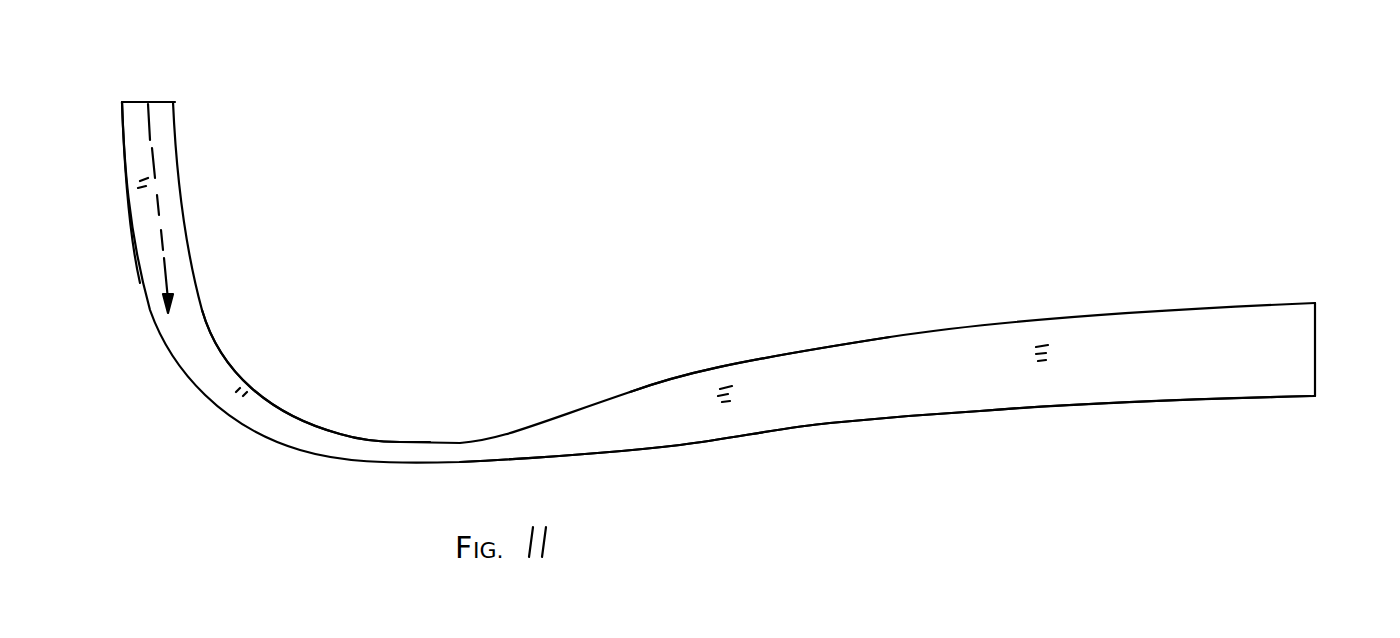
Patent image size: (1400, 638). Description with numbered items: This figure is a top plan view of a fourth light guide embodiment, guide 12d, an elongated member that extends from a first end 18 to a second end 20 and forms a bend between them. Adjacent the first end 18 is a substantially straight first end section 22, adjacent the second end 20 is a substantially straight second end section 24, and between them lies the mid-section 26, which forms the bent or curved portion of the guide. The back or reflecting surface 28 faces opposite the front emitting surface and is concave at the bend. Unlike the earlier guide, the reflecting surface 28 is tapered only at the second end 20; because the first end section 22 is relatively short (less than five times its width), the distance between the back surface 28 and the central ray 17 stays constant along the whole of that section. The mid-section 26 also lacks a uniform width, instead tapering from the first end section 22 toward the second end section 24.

The guide 12d is at (573, 340).
The central ray 17 is at (155, 165).
The first end 18 is at (147, 102).
The second end 20 is at (1305, 356).
The first end section 22 is at (132, 288).
The second end section 24 is at (1310, 414).
The mid-section 26 is at (438, 433).
The back surface 28 is at (742, 360).